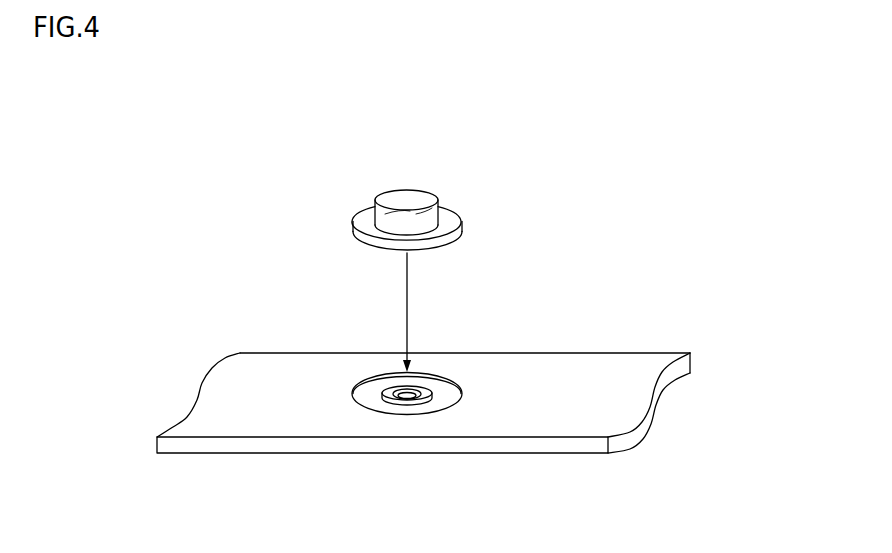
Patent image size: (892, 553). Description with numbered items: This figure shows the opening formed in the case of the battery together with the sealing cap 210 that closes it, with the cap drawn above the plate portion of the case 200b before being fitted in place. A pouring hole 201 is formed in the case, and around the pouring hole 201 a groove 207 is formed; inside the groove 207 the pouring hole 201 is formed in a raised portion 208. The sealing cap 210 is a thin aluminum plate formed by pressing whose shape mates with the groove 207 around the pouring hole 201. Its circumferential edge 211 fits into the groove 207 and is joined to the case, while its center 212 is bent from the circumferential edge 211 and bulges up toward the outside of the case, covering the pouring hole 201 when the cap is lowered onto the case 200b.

The sealing cap 210 is at (423, 175).
The circumferential edge 211 is at (365, 218).
The center 212 is at (407, 197).
The housing plate 200b is at (572, 370).
The raised portion 208 is at (387, 388).
The groove 207 is at (440, 404).
The pouring hole 201 is at (412, 393).